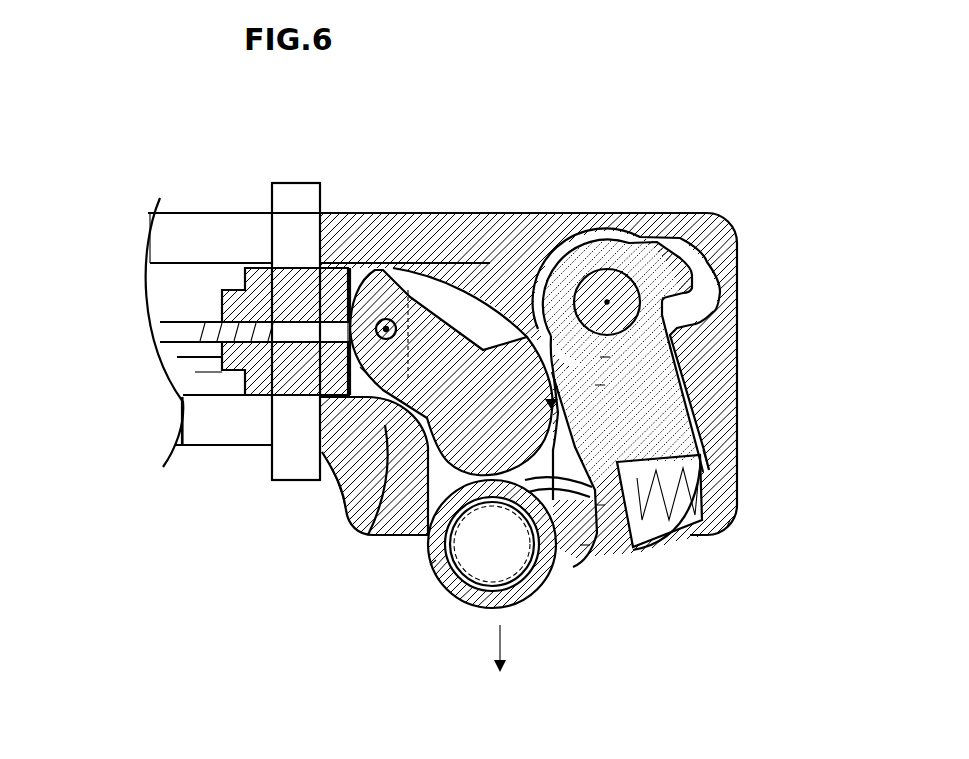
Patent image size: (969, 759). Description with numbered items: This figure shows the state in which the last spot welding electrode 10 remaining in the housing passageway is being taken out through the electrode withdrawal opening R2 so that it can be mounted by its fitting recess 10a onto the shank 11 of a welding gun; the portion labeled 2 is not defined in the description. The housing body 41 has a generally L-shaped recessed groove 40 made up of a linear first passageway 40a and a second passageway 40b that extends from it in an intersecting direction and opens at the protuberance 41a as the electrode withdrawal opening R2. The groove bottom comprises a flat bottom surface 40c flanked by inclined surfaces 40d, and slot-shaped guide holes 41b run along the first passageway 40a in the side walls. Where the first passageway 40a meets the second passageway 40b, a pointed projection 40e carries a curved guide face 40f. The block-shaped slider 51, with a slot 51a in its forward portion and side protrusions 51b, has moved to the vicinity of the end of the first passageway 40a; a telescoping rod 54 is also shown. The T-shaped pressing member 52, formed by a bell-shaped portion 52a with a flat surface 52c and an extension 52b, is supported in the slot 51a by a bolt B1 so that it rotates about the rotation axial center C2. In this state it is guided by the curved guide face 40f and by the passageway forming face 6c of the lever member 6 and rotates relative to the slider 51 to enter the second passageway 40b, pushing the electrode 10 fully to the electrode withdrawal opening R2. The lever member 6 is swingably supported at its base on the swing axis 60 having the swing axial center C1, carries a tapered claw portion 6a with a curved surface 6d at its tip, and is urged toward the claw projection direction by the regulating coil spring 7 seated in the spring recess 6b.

The parking lock device 2 is at (705, 183).
The lever member 6 is at (640, 575).
The claw portion 6a is at (550, 573).
The spring recess 6b is at (680, 537).
The passageway forming face 6c is at (556, 400).
The curved surface 6d is at (582, 573).
The regulating coil spring 7 is at (703, 452).
The spot welding electrode 10 is at (520, 590).
The fitting recess 10a is at (484, 570).
The shank 11 is at (447, 583).
The recessed groove 40 is at (212, 269).
The first passageway 40a is at (195, 378).
The second passageway 40b is at (610, 357).
The flat bottom surface 40c is at (600, 384).
The inclined surfaces 40d is at (447, 293).
The pointed projection 40e is at (477, 310).
The curved guide face 40f is at (500, 300).
The housing body 41 is at (592, 203).
The protuberance 41a is at (727, 527).
The guide holes 41b is at (216, 243).
The slider 51 is at (258, 255).
The slot 51a is at (352, 262).
The protrusions 51b is at (301, 183).
The pressing member 52 is at (262, 612).
The bell-shaped portion 52a is at (362, 540).
The extension 52b is at (343, 515).
The flat surface 52c is at (660, 478).
The telescoping rod 54 is at (185, 310).
The swing axis 60 is at (652, 298).
The bolt B1 is at (408, 290).
The swing axial center C1 is at (612, 298).
The rotation axial center C2 is at (386, 318).
The electrode withdrawal opening R2 is at (433, 565).